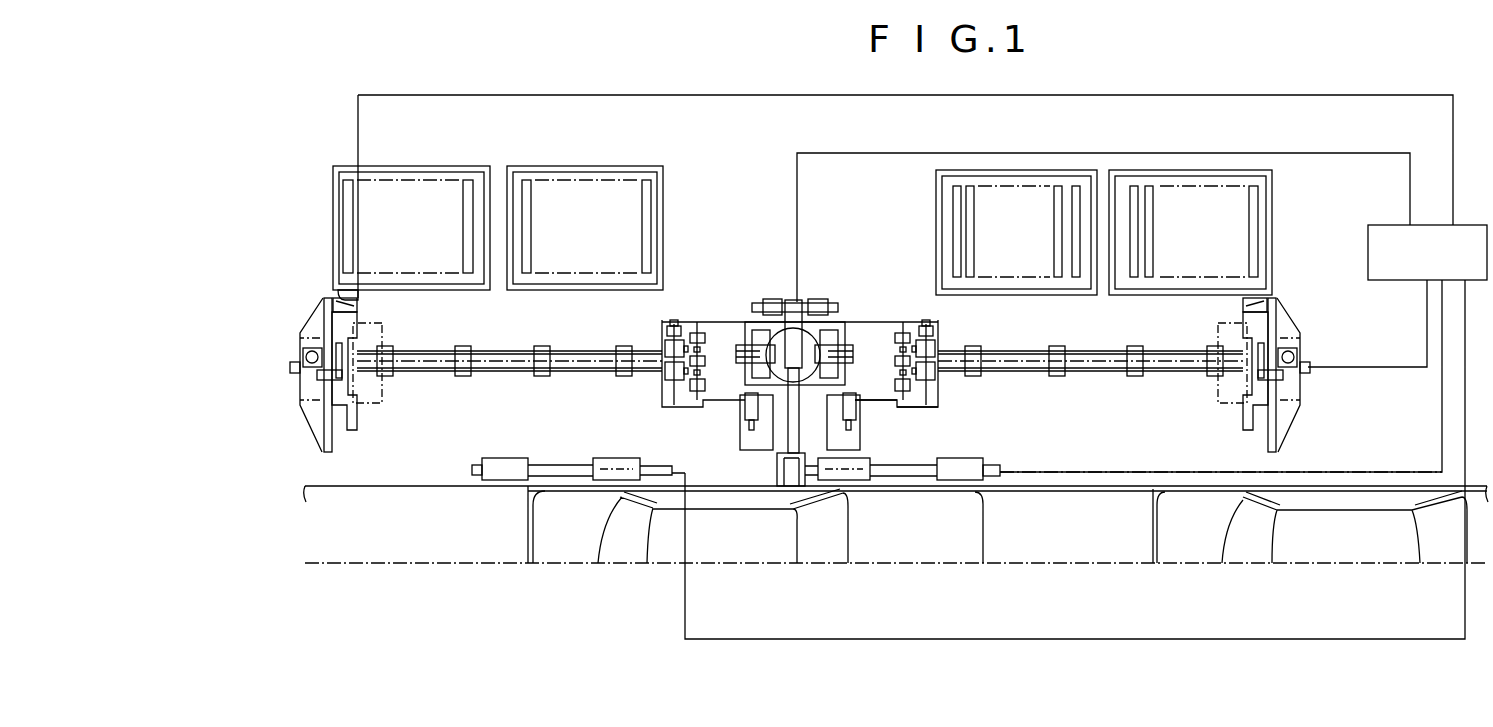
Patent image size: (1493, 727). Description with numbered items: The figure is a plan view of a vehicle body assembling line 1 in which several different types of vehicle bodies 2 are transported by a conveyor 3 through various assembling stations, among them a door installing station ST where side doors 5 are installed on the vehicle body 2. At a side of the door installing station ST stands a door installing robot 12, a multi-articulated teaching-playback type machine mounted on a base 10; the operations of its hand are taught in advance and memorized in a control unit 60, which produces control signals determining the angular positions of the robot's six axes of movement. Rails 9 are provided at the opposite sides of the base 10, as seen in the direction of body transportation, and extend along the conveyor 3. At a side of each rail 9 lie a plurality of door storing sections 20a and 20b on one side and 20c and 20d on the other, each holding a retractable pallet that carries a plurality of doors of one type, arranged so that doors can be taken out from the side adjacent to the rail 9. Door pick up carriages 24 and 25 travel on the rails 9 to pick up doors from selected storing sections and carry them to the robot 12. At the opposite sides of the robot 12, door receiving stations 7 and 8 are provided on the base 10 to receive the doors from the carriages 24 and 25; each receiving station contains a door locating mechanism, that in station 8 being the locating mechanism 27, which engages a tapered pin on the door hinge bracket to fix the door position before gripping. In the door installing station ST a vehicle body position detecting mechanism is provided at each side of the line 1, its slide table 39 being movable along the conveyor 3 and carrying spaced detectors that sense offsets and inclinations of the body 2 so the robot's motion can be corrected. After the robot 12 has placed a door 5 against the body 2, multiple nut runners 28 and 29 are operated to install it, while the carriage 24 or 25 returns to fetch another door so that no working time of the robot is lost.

The vehicle body assembling line 1 is at (408, 478).
The vehicle body 2 is at (570, 482).
The conveyor 3 is at (528, 507).
The side door 5 is at (470, 290).
The door receiving station 7 is at (678, 416).
The door receiving station 8 is at (920, 412).
The rail 9 is at (514, 351).
The base 10 is at (879, 402).
The door installing robot 12 is at (822, 336).
The door storing section 20a is at (470, 166).
The door storing section 20b is at (640, 166).
The door storing section 20c is at (1010, 170).
The door storing section 20d is at (1210, 170).
The door pick up carriage 24 is at (314, 312).
The door pick up carriage 25 is at (1283, 327).
The door locating mechanism 27 is at (938, 410).
The multiple nut runner 28 is at (740, 438).
The multiple nut runner 29 is at (862, 445).
The slide table 39 is at (507, 458).
The control unit 60 is at (1382, 225).
The door installing station ST is at (635, 399).